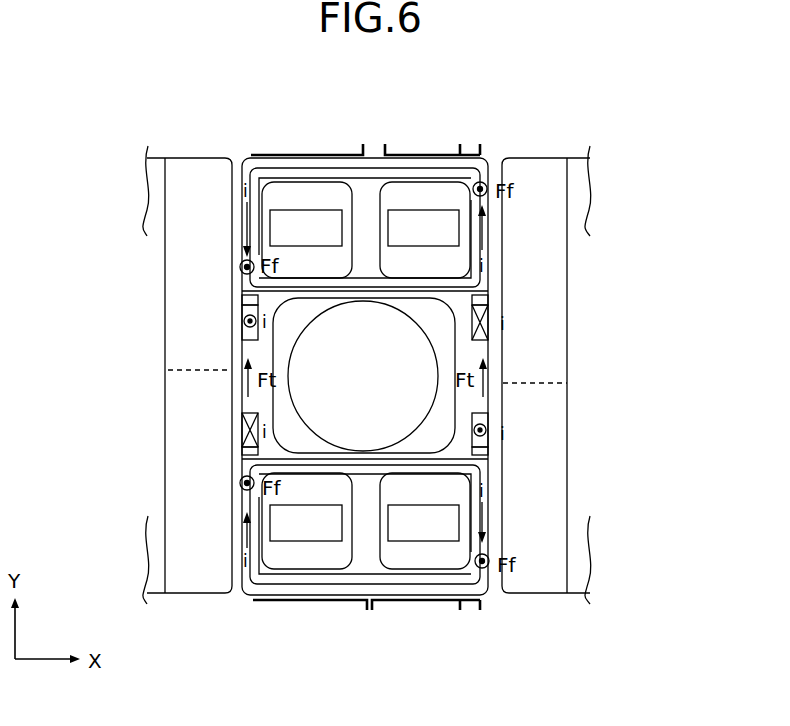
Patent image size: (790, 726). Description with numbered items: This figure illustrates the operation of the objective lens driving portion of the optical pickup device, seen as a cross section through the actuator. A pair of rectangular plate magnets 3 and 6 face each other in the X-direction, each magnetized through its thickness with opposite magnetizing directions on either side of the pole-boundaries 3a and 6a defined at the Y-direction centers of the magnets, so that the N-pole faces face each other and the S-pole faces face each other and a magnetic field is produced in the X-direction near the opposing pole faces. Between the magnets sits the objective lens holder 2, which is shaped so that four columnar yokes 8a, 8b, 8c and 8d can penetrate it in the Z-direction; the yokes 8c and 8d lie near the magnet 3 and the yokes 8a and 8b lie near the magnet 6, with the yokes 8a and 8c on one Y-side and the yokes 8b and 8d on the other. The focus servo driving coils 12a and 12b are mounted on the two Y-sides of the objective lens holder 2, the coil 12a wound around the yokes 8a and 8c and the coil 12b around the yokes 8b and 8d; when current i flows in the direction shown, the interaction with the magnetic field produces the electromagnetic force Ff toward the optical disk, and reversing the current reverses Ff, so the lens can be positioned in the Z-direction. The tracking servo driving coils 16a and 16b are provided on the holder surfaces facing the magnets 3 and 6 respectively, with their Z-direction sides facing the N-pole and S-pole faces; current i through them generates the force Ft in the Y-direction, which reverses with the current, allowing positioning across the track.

The objective lens holder 2 is at (447, 357).
The magnet 3 is at (555, 370).
The pole-boundary 3a is at (540, 383).
The magnet 6 is at (187, 341).
The pole-boundary 6a is at (183, 370).
The yoke 8a is at (308, 222).
The yoke 8b is at (297, 535).
The yoke 8c is at (434, 222).
The yoke 8d is at (442, 535).
The focus servo driving coil 12a is at (371, 172).
The focus servo driving coil 12b is at (373, 577).
The tracking servo driving coil 16a is at (487, 421).
The tracking servo driving coil 16b is at (247, 428).